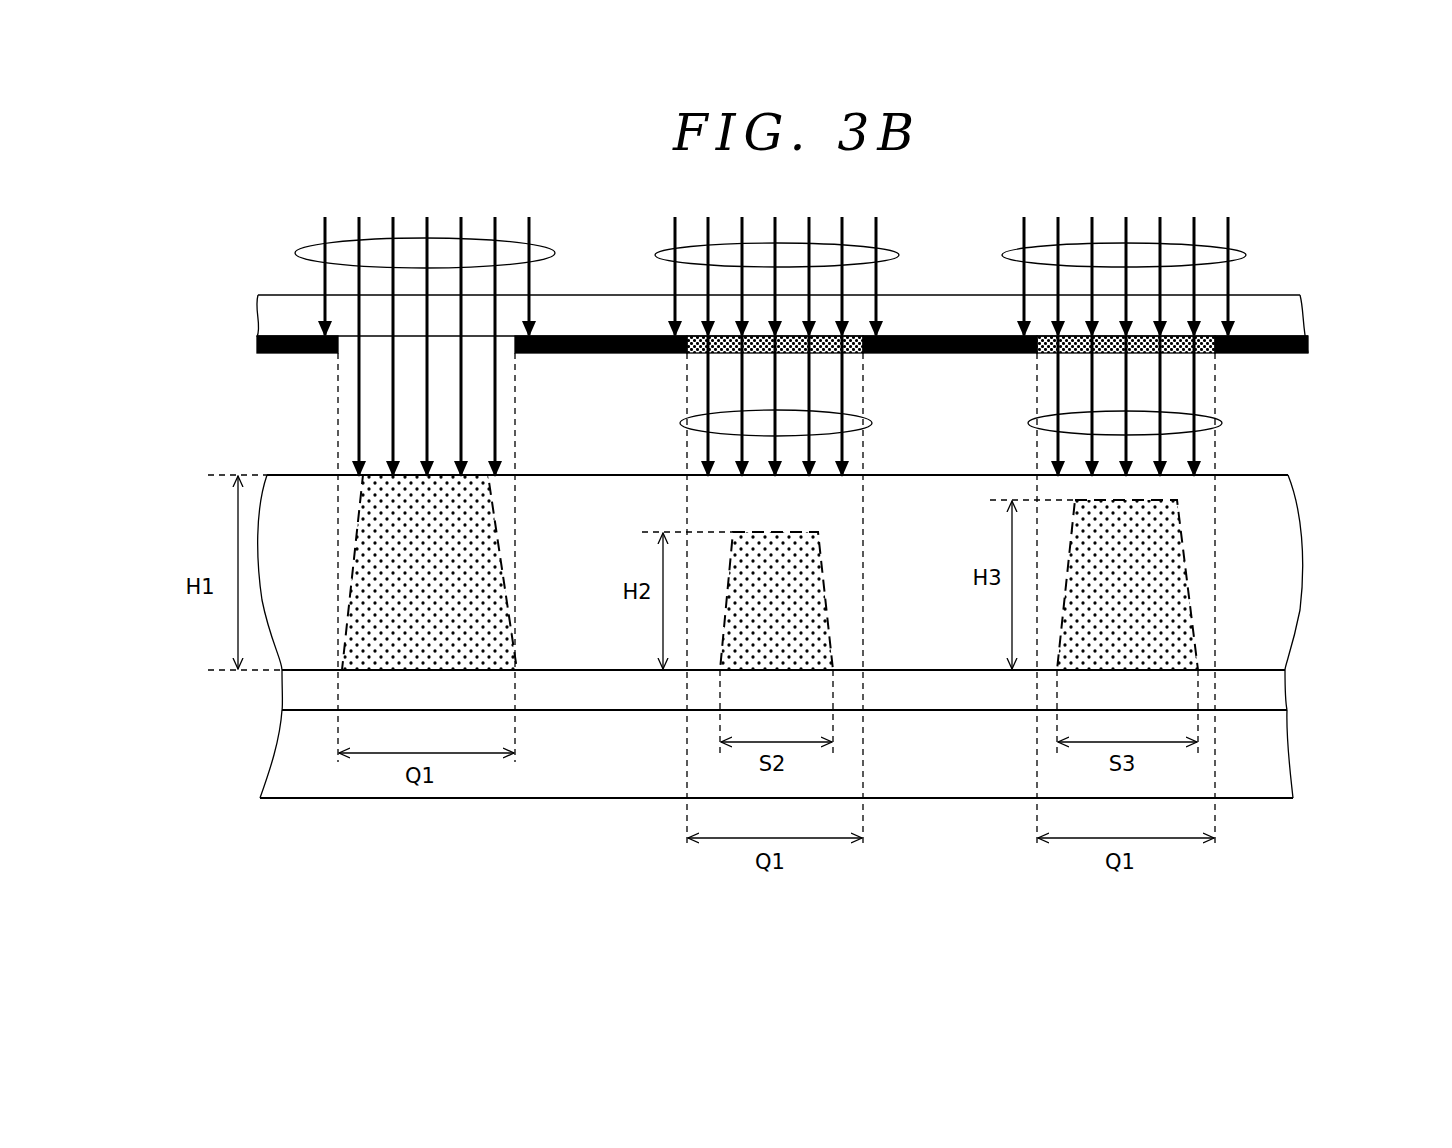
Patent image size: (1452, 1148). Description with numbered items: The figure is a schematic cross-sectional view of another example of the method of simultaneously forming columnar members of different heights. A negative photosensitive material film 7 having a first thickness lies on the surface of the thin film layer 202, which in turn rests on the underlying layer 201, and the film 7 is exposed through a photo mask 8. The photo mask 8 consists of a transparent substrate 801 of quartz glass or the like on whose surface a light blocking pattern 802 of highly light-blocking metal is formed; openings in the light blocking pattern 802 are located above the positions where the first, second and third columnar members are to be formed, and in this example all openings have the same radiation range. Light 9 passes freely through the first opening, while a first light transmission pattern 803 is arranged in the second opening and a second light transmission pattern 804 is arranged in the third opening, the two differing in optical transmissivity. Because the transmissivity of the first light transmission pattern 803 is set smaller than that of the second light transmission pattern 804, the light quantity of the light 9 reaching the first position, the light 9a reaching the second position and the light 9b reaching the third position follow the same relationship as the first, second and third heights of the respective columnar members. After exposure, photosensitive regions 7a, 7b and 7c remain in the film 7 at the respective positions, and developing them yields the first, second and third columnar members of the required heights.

The photosensitive material film 7 is at (1277, 533).
The photosensitive regions 7a is at (485, 603).
The photosensitive regions 7b is at (808, 605).
The photosensitive regions 7c is at (1158, 607).
The photo mask 8 is at (236, 320).
The light 9 is at (317, 268).
The light 9a is at (690, 423).
The light 9b is at (1038, 423).
The transparent substrate 801 is at (1288, 313).
The light blocking pattern 802 is at (280, 353).
The first light transmission pattern 803 is at (813, 342).
The second light transmission pattern 804 is at (1190, 342).
The substrate 201 is at (1272, 758).
The thin film layer 202 is at (1265, 690).